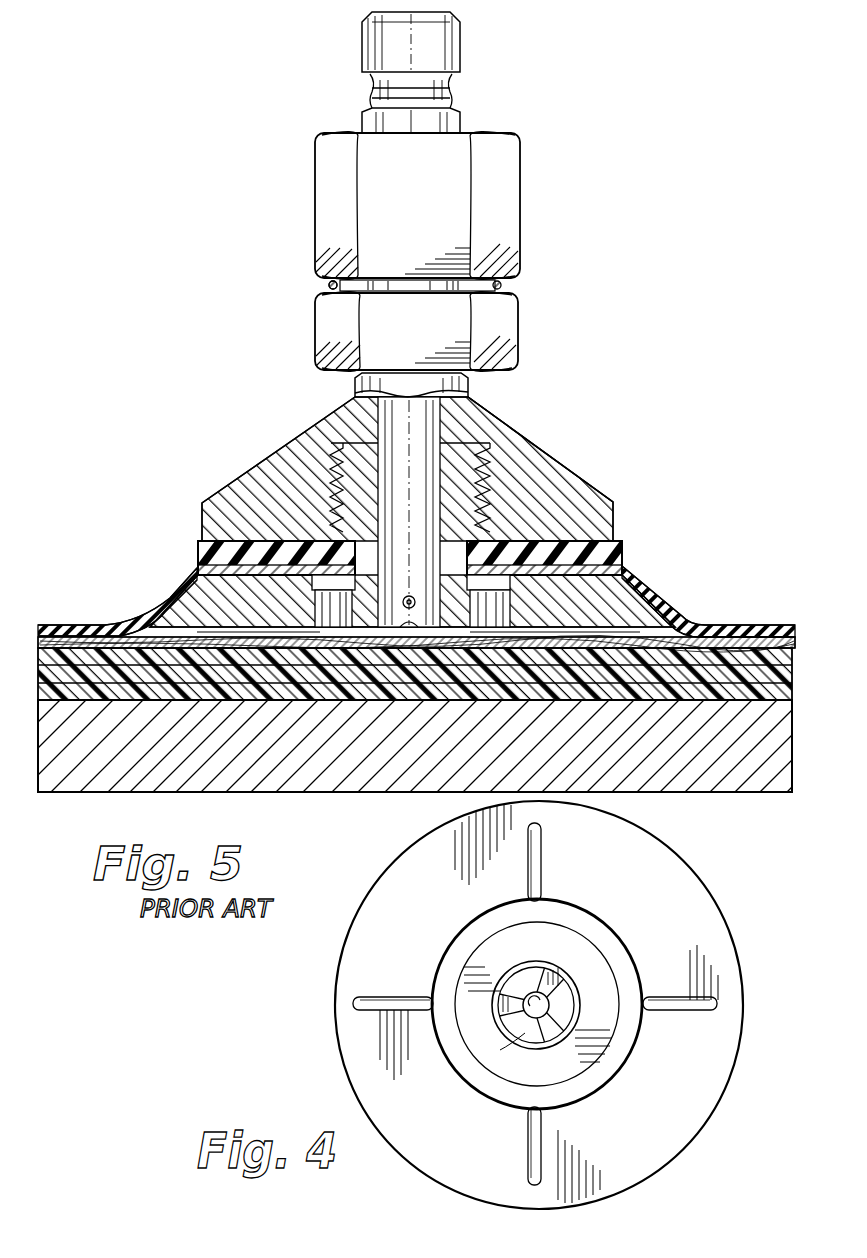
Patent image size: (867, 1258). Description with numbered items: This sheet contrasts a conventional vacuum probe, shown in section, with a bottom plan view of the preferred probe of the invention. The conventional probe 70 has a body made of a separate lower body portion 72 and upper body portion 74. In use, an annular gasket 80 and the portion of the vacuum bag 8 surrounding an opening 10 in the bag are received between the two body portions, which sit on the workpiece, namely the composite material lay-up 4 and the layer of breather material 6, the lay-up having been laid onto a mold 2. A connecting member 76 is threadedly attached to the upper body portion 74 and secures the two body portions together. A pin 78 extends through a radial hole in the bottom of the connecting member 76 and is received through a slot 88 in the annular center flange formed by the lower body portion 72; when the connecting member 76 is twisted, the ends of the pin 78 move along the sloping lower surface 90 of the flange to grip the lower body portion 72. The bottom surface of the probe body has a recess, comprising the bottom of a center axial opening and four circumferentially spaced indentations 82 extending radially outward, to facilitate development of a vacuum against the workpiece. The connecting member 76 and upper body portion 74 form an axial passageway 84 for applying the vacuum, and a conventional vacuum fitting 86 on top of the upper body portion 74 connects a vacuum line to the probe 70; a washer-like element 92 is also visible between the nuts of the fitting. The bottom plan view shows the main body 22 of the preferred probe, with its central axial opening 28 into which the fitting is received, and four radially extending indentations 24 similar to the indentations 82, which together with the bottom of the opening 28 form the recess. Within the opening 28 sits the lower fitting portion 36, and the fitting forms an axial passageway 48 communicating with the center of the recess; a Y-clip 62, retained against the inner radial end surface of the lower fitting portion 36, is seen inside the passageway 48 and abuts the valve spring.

In FIG. 5, the mold 2 is at (76, 782).
In FIG. 5, the composite material lay-up 4 is at (802, 655).
In FIG. 5, the layer of breather material 6 is at (38, 637).
In FIG. 5, the vacuum bag 8 is at (88, 637).
In FIG. 5, the opening 10 is at (317, 533).
In FIG. 5, the probe 70 is at (553, 438).
In FIG. 5, the lower body portion 72 is at (640, 606).
In FIG. 5, the upper body portion 74 is at (580, 497).
In FIG. 5, the connecting member 76 is at (447, 422).
In FIG. 5, the pin 78 is at (411, 595).
In FIG. 5, the annular gasket 80 is at (205, 553).
In FIG. 5, the indentations 82 is at (203, 633).
In FIG. 5, the axial passageway 84 is at (336, 452).
In FIG. 5, the vacuum fitting 86 is at (527, 193).
In FIG. 5, the slot 88 is at (492, 595).
In FIG. 5, the sloping lower surface 90 is at (487, 602).
In FIG. 5, the washer 92 is at (329, 284).
In FIG. 4, the main body 22 is at (335, 986).
In FIG. 4, the indentations 24 is at (537, 850).
In FIG. 4, the central axial opening 28 is at (590, 1080).
In FIG. 4, the lower fitting portion 36 is at (538, 996).
In FIG. 4, the axial passageway 48 is at (567, 1012).
In FIG. 4, the Y-clip 62 is at (525, 1033).